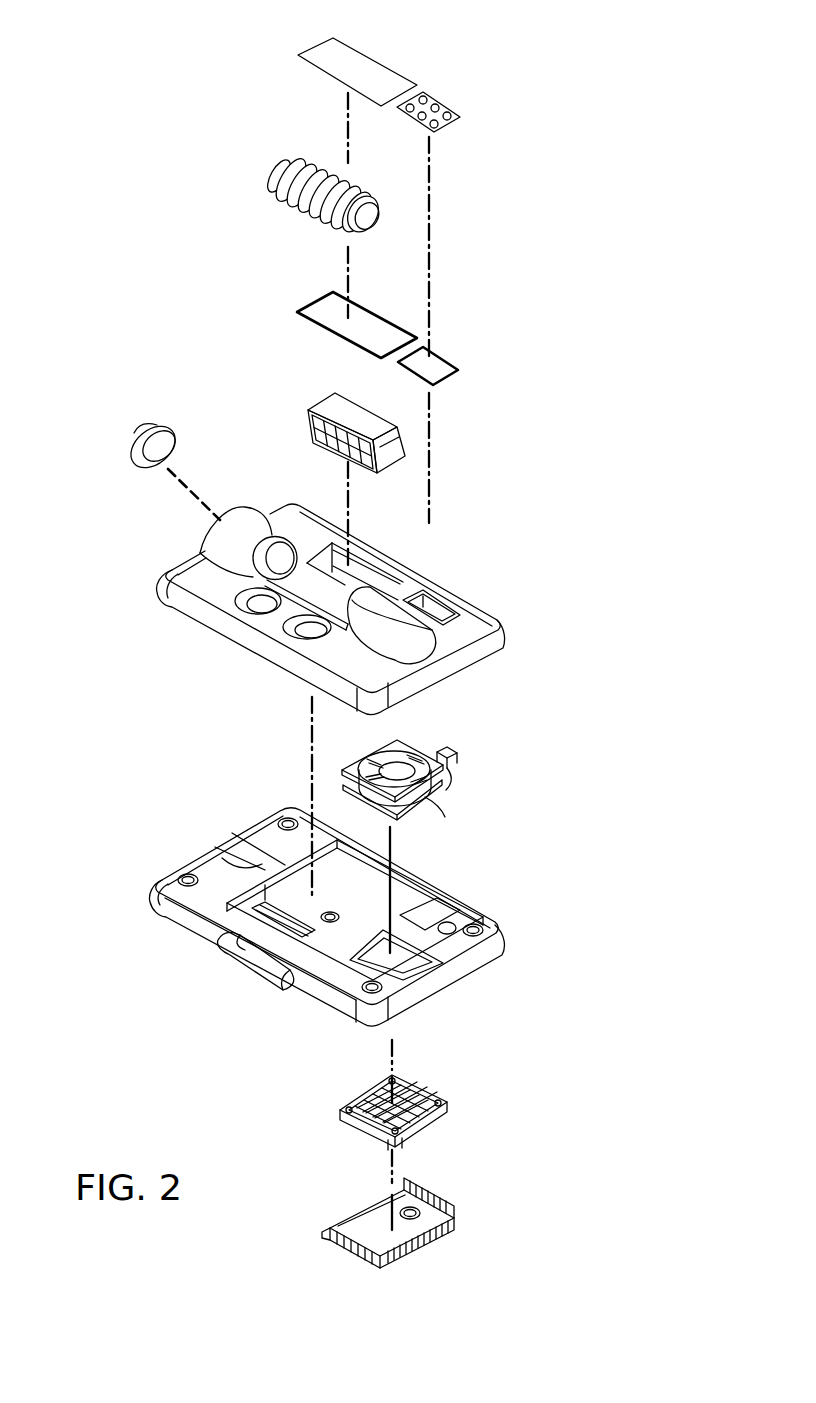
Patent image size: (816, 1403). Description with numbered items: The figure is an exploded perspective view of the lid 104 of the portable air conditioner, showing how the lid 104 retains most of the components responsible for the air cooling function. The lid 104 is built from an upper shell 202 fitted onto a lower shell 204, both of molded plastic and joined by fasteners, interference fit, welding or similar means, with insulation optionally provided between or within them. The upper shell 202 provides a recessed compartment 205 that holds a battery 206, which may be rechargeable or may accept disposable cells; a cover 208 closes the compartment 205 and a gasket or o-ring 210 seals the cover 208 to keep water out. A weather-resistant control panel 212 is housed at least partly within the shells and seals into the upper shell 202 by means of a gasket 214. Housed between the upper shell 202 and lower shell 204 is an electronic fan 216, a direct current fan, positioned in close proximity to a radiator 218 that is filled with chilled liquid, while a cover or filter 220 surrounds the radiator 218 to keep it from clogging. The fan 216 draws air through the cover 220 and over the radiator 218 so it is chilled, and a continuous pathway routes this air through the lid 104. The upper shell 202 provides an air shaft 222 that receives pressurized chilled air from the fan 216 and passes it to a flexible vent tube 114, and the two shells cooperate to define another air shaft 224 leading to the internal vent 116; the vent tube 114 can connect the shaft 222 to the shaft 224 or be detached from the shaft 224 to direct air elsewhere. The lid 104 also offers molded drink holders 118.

The lid 104 is at (594, 585).
The flexible vent tube 114 is at (277, 156).
The internal vent 116 is at (137, 433).
The molded drink holders 118 is at (253, 601).
The upper shell 202 is at (341, 582).
The lower shell 204 is at (470, 990).
The recessed compartment 205 is at (375, 580).
The battery 206 is at (323, 405).
The cover 208 is at (373, 64).
The gasket or o-ring 210 is at (377, 312).
The control panel 212 is at (443, 102).
The gasket 214 is at (443, 357).
The electronic fan 216 is at (423, 797).
The radiator 218 is at (423, 1130).
The cover or filter 220 is at (423, 1250).
The air shaft 222 is at (407, 637).
The air shaft 224 is at (255, 517).